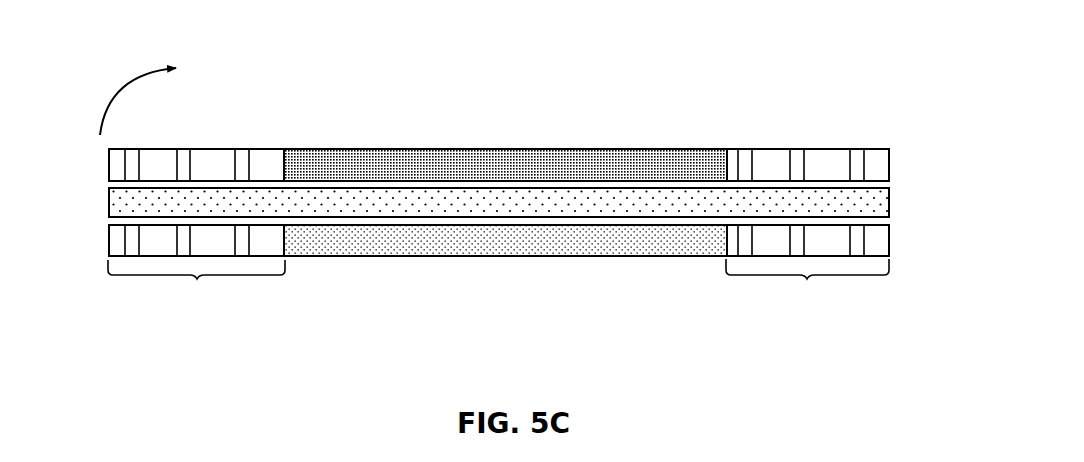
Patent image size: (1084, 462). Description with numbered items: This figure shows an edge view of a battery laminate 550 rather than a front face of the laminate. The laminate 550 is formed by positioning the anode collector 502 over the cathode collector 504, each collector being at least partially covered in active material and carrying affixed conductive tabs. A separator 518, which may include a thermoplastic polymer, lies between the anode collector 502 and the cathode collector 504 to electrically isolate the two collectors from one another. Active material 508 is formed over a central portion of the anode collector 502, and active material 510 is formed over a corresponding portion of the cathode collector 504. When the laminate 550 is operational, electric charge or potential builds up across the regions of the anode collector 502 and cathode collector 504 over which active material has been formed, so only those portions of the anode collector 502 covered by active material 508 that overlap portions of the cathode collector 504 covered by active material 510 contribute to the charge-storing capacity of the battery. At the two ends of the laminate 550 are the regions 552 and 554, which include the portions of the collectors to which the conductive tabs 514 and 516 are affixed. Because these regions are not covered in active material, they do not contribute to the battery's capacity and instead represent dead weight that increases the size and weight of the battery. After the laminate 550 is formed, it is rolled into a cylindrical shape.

The battery laminate 550 is at (136, 48).
The anode collector 502 is at (877, 168).
The cathode collector 504 is at (873, 243).
The active material 508 is at (583, 163).
The active material 510 is at (580, 243).
The separator 518 is at (877, 205).
The conductive tabs 514 is at (128, 169).
The conductive tabs 516 is at (128, 242).
The region 552 is at (197, 281).
The region 554 is at (807, 281).